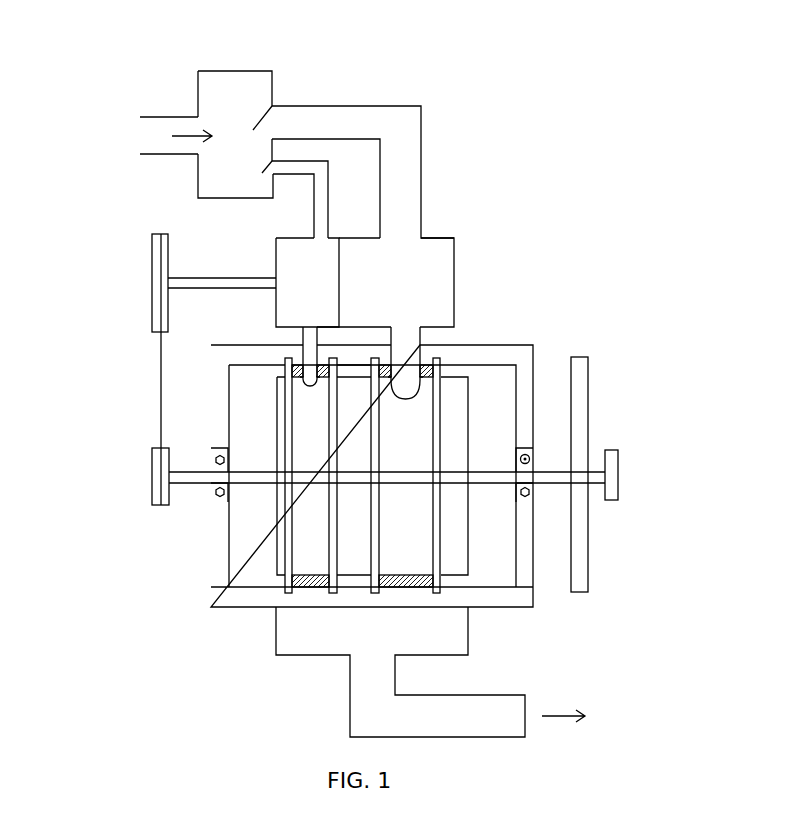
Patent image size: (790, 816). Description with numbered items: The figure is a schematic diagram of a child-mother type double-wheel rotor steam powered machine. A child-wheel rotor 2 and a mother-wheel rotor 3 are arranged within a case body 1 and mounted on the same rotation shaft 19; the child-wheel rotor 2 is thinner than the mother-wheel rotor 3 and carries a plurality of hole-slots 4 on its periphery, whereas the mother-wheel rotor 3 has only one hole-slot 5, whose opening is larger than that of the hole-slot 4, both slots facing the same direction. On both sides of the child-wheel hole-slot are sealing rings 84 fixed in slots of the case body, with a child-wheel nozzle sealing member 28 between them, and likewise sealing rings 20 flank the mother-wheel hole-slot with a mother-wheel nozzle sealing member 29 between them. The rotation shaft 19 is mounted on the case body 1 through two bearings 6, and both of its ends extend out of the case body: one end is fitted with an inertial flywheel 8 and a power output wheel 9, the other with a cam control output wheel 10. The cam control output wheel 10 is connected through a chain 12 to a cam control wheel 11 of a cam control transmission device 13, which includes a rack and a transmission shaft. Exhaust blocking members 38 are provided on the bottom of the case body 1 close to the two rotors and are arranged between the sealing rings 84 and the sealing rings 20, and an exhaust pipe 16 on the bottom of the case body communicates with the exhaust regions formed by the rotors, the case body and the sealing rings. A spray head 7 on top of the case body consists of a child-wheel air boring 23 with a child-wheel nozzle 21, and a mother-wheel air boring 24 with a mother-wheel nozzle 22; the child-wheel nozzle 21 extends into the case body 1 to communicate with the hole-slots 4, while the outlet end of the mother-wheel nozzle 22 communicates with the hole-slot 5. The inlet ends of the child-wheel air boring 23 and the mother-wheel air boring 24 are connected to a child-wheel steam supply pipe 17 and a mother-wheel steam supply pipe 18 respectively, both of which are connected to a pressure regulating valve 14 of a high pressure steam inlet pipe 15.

The case body 1 is at (523, 355).
The child-wheel rotor 2 is at (309, 493).
The mother-wheel rotor 3 is at (453, 459).
The hole-slot 4 is at (310, 387).
The hole-slot 5 is at (407, 397).
The bearing 6 is at (525, 459).
The spray head 7 is at (374, 262).
The inertial flywheel 8 is at (577, 532).
The power output wheel 9 is at (610, 470).
The cam control output wheel 10 is at (162, 480).
The cam control wheel 11 is at (163, 285).
The chain 12 is at (162, 379).
The cam control transmission device 13 is at (183, 285).
The pressure regulating valve 14 is at (235, 88).
The high pressure steam inlet pipe 15 is at (150, 138).
The exhaust pipe 16 is at (472, 710).
The child-wheel steam supply pipe 17 is at (322, 200).
The mother-wheel steam supply pipe 18 is at (404, 161).
The rotation shaft 19 is at (387, 477).
The sealing ring 20 is at (435, 500).
The child-wheel nozzle 21 is at (310, 342).
The mother-wheel nozzle 22 is at (405, 340).
The child-wheel air boring 23 is at (301, 270).
The mother-wheel air boring 24 is at (411, 268).
The child-wheel nozzle sealing member 28 is at (300, 377).
The mother-wheel nozzle sealing member 29 is at (425, 368).
The exhaust blocking member 38 is at (398, 585).
The sealing ring 84 is at (285, 365).